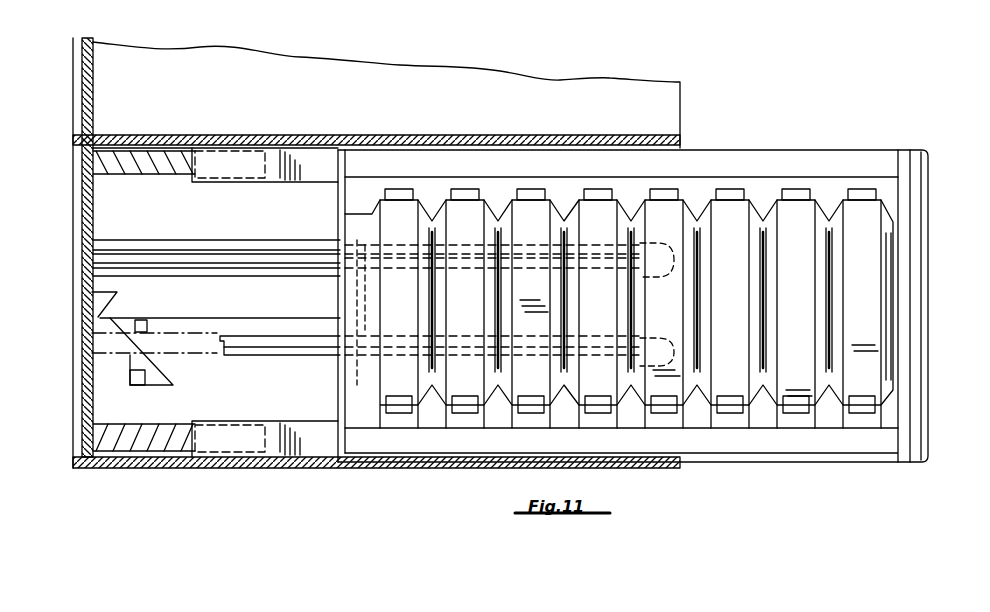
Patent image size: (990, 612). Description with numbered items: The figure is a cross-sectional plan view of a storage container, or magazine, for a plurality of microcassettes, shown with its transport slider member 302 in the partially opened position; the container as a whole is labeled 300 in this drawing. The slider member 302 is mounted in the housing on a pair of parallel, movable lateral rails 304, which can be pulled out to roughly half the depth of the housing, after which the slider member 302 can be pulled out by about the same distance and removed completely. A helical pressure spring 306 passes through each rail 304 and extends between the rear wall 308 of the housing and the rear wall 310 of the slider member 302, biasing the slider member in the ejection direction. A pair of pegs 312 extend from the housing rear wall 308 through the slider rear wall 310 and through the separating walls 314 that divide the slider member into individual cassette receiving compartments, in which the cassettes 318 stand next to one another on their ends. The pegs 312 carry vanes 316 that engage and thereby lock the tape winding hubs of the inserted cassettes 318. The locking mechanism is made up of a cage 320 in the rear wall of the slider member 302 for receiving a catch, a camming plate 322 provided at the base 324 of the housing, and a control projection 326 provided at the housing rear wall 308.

The housing 300 is at (610, 146).
The transport slider member 302 is at (934, 341).
The lateral rails 304 is at (314, 160).
The helical pressure spring 306 is at (136, 152).
The rear wall of housing 308 is at (82, 195).
The rear wall of slider member 310 is at (340, 200).
The pegs 312 is at (208, 240).
The separating walls 314 is at (629, 214).
The vanes 316 is at (140, 250).
The cassettes 318 is at (597, 207).
The cage 320 is at (357, 385).
The camming plate 322 is at (156, 389).
The base of housing 324 is at (102, 394).
The control projection 326 is at (98, 301).